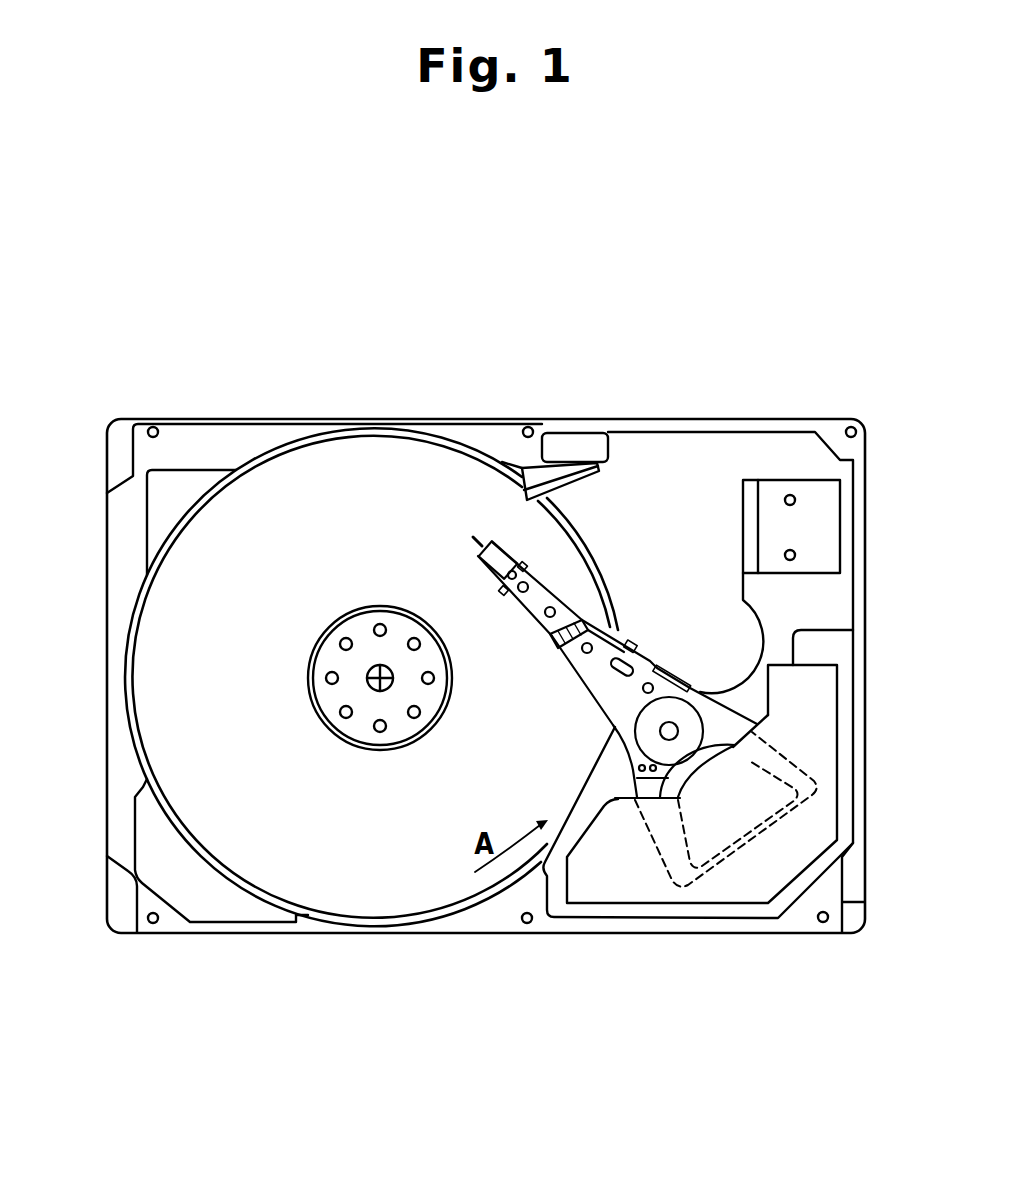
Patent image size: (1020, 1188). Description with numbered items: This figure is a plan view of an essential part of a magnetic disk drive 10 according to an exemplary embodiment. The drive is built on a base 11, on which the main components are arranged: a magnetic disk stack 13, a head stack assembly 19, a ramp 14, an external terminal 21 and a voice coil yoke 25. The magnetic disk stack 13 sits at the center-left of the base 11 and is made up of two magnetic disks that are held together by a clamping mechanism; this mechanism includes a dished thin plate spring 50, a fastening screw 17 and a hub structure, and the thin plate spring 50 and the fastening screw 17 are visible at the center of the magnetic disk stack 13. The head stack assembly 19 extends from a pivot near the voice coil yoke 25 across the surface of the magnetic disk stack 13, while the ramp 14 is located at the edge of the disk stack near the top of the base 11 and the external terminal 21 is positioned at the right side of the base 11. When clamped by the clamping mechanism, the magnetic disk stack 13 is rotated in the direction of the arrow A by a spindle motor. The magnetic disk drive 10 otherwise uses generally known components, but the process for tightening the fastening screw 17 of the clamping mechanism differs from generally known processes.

The magnetic disk drive 10 is at (391, 406).
The base 11 is at (705, 460).
The magnetic disk stack 13 is at (389, 834).
The ramp 14 is at (568, 460).
The fastening screw 17 is at (367, 676).
The head stack assembly 19 is at (551, 683).
The external terminal 21 is at (818, 528).
The voice coil yoke 25 is at (840, 677).
The thin plate spring 50 is at (311, 602).